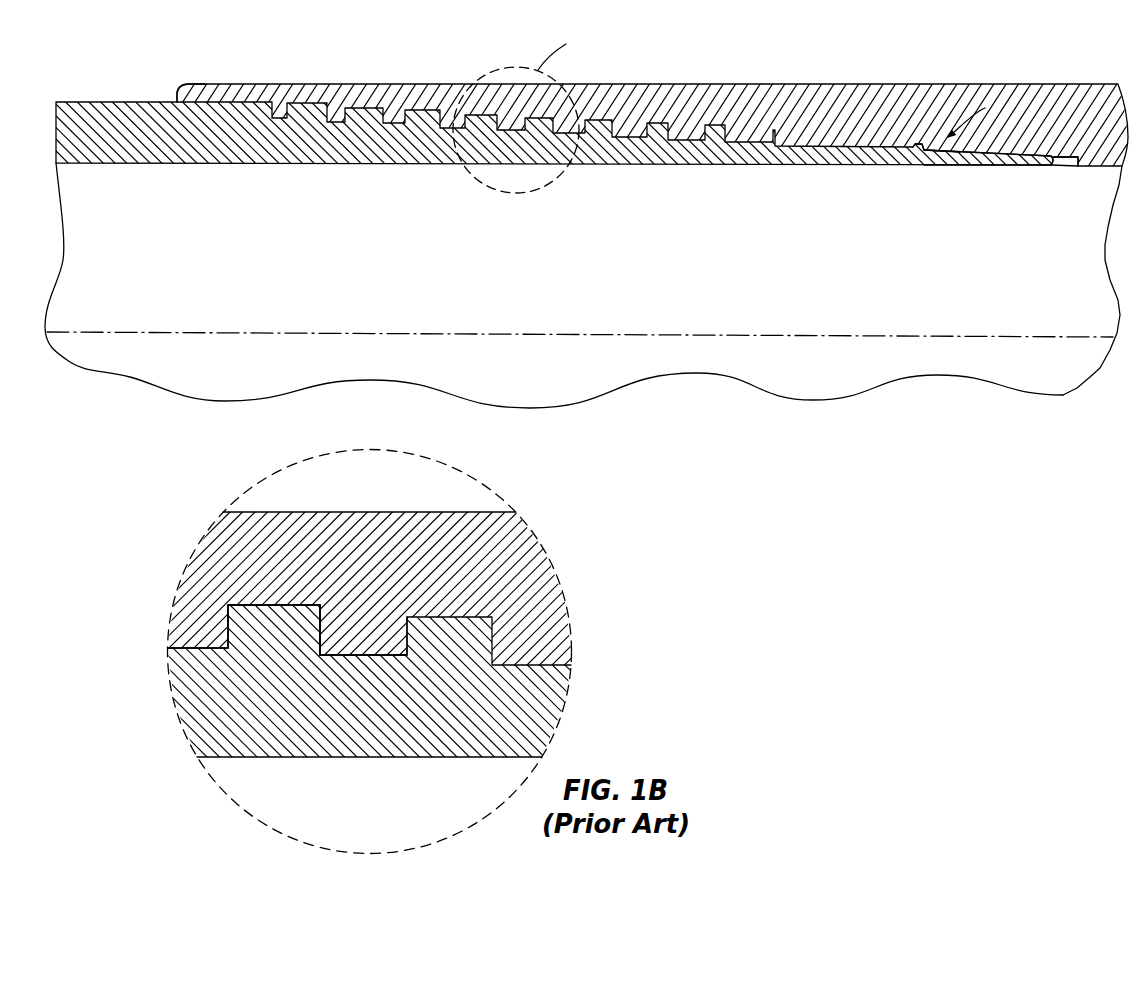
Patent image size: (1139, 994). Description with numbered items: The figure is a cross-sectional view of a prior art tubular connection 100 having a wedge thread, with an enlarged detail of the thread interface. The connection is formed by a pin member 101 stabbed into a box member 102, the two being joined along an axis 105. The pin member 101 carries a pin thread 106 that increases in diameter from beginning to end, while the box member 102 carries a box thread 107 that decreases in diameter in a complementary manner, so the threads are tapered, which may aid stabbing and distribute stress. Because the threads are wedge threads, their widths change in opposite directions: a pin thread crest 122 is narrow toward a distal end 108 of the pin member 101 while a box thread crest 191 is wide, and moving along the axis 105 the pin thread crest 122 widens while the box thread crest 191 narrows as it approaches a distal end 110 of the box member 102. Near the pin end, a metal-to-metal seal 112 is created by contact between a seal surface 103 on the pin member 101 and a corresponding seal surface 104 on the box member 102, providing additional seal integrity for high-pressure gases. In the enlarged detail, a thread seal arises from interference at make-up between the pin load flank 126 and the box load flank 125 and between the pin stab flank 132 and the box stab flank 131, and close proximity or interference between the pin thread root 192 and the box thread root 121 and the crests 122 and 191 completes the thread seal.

In FIG. 1A, the tubular connection 100 is at (193, 48).
In FIG. 1A, the pin member 101 is at (146, 141).
In FIG. 1B, the pin member 101 is at (254, 749).
In FIG. 1A, the box member 102 is at (1112, 131).
In FIG. 1B, the box member 102 is at (509, 546).
In FIG. 1A, the seal surface 103 is at (907, 147).
In FIG. 1A, the seal surface 104 is at (937, 150).
In FIG. 1A, the axis 105 is at (333, 332).
In FIG. 1B, the pin thread 106 is at (299, 641).
In FIG. 1B, the box thread 107 is at (389, 641).
In FIG. 1A, the distal end of pin member 108 is at (1000, 166).
In FIG. 1A, the distal end of box member 110 is at (183, 96).
In FIG. 1A, the metal-to-metal seal 112 is at (991, 118).
In FIG. 1B, the box thread root 121 is at (250, 607).
In FIG. 1B, the pin thread crest 122 is at (298, 606).
In FIG. 1B, the box load flank 125 is at (226, 604).
In FIG. 1B, the pin load flank 126 is at (226, 630).
In FIG. 1B, the box stab flank 131 is at (322, 604).
In FIG. 1B, the pin stab flank 132 is at (333, 625).
In FIG. 1B, the box thread crest 191 is at (356, 657).
In FIG. 1B, the pin thread root 192 is at (396, 655).